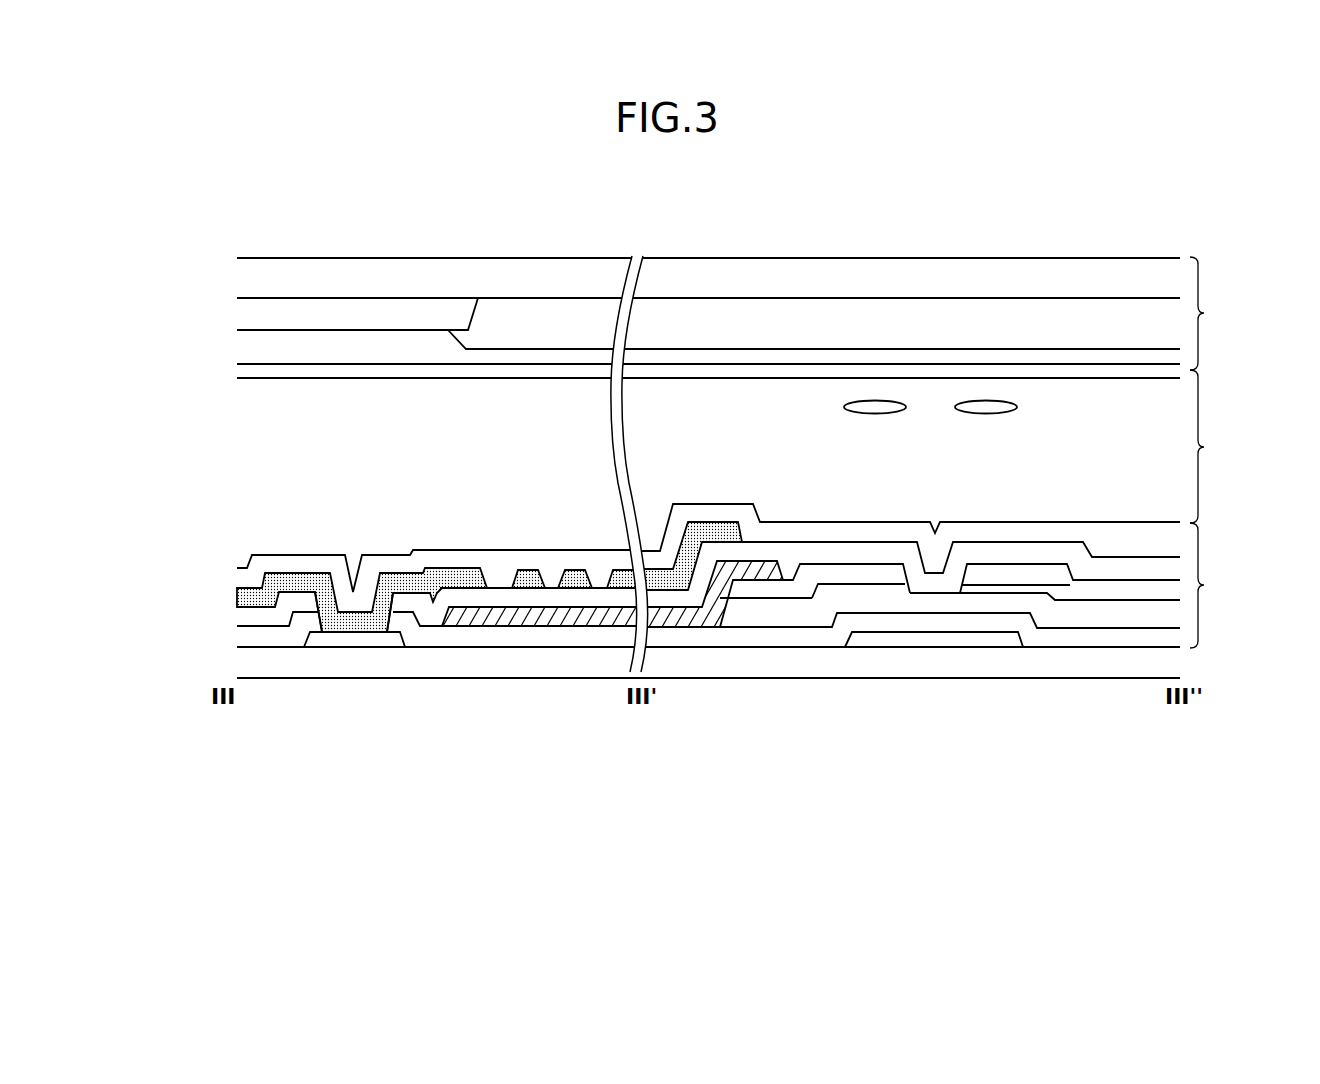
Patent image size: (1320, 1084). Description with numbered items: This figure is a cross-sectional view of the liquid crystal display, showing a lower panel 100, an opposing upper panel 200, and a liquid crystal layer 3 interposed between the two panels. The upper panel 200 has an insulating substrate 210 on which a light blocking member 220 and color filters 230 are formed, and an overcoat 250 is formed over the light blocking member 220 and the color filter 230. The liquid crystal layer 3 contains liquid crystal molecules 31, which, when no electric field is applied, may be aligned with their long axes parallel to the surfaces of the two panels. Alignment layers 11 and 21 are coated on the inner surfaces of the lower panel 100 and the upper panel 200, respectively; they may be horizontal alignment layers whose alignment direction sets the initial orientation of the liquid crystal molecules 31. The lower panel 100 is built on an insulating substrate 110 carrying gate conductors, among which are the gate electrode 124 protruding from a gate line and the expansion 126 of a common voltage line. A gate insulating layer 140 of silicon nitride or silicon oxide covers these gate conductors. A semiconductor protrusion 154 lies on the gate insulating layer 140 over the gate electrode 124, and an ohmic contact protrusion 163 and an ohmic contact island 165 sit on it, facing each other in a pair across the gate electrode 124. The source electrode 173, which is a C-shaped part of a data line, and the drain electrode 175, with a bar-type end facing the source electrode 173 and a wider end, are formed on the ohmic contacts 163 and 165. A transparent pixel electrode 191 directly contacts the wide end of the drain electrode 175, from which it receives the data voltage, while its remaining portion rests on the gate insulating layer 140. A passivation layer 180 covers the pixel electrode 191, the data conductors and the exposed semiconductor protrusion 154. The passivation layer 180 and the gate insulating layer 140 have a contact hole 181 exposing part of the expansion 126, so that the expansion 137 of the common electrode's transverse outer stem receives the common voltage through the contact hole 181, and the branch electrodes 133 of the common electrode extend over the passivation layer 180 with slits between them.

The liquid crystal layer 3 is at (1226, 456).
The alignment layer 11 is at (273, 563).
The alignment layer 21 is at (262, 371).
The liquid crystal molecules 31 is at (1004, 407).
The lower panel 100 is at (1228, 606).
The insulating substrate 110 is at (272, 660).
The gate electrode 124 is at (880, 640).
The expansion 126 is at (349, 640).
The branch electrode 133 is at (458, 582).
The expansion 137 is at (388, 638).
The gate insulating layer 140 is at (573, 637).
The semiconductor protrusion 154 is at (935, 600).
The ohmic contact protrusion 163 is at (1047, 588).
The ohmic contact island 165 is at (850, 590).
The source electrode 173 is at (1027, 570).
The drain electrode 175 is at (893, 575).
The passivation layer 180 is at (468, 598).
The contact hole 181 is at (318, 626).
The pixel electrode 191 is at (520, 617).
The upper panel 200 is at (1228, 319).
The insulating substrate 210 is at (297, 283).
The light blocking member 220 is at (390, 318).
The color filter 230 is at (562, 325).
The overcoat 250 is at (265, 348).